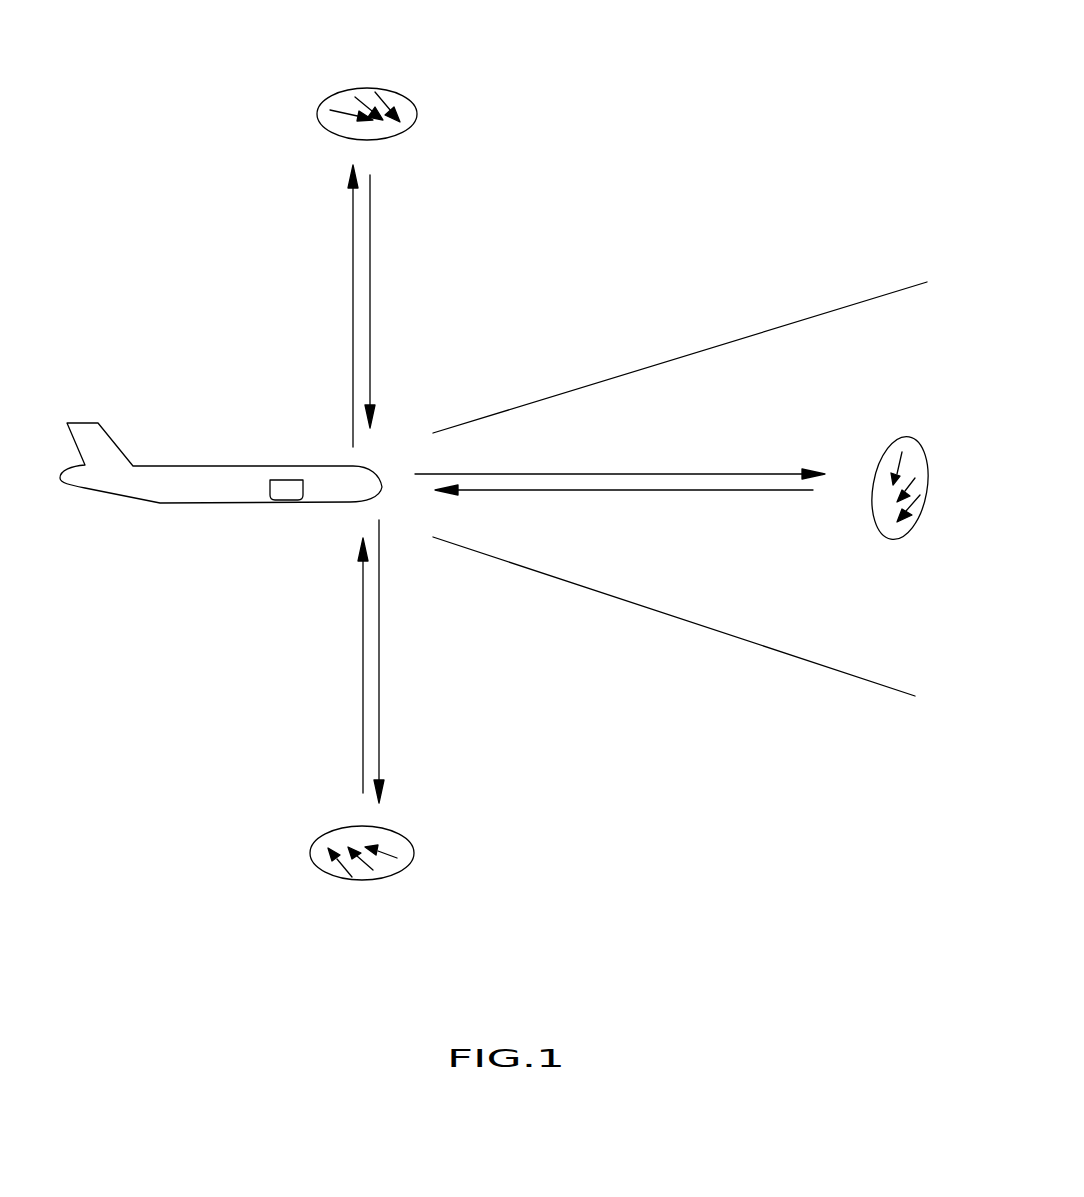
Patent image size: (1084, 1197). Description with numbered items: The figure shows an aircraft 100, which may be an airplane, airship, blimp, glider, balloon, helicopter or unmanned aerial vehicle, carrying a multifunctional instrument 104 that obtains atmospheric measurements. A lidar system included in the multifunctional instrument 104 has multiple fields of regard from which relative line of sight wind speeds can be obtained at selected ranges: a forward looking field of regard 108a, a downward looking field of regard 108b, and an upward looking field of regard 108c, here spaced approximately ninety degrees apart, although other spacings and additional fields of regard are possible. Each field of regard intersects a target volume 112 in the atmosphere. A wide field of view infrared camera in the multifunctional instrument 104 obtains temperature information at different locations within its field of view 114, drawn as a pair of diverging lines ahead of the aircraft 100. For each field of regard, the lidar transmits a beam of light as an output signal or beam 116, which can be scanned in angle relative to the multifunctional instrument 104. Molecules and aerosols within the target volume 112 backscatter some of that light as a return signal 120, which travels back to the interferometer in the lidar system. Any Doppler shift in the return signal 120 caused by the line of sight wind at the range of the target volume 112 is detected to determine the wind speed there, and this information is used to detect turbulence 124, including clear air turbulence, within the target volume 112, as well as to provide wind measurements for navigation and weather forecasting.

The aircraft 100 is at (200, 466).
The multifunctional instrument 104 is at (285, 480).
The forward looking field of regard 108a is at (885, 438).
The downward looking field of regard 108b is at (415, 850).
The upward looking field of regard 108c is at (317, 113).
The target volume 112 is at (364, 90).
The field of view 114 is at (677, 357).
The output signal or beam 116 is at (353, 270).
The return signal 120 is at (370, 305).
The turbulence 124 is at (397, 128).